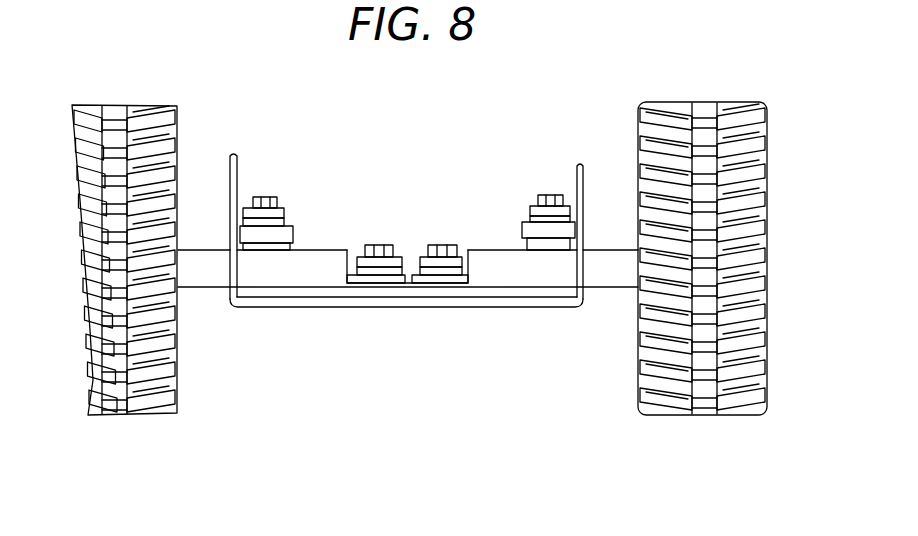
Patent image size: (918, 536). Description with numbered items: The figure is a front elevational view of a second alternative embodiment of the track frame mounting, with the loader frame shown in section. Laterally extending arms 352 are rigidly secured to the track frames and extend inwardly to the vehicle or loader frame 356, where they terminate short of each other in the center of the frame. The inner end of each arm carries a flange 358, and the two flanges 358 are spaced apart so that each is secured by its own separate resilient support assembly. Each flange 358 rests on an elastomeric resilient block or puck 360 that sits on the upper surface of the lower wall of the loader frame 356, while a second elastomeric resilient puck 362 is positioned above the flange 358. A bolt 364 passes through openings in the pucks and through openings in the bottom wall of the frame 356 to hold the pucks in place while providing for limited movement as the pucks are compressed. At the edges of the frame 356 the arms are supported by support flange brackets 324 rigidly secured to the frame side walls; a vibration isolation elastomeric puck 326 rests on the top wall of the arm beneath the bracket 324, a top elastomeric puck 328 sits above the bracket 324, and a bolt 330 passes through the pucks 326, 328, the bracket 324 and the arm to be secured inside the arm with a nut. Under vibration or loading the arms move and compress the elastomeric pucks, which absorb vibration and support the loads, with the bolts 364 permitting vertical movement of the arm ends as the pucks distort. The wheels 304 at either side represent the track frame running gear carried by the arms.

The wheel 304 is at (118, 122).
The support flange bracket 324 is at (250, 231).
The vibration isolation elastomeric puck 326 is at (323, 288).
The top elastomeric puck 328 is at (242, 222).
The bolt 330 is at (272, 197).
The laterally extending arm 352 is at (606, 268).
The loader frame 356 is at (508, 308).
The flange 358 is at (430, 284).
The elastomeric resilient puck 360 is at (463, 292).
The elastomeric resilient puck 362 is at (357, 267).
The bolt 364 is at (373, 246).